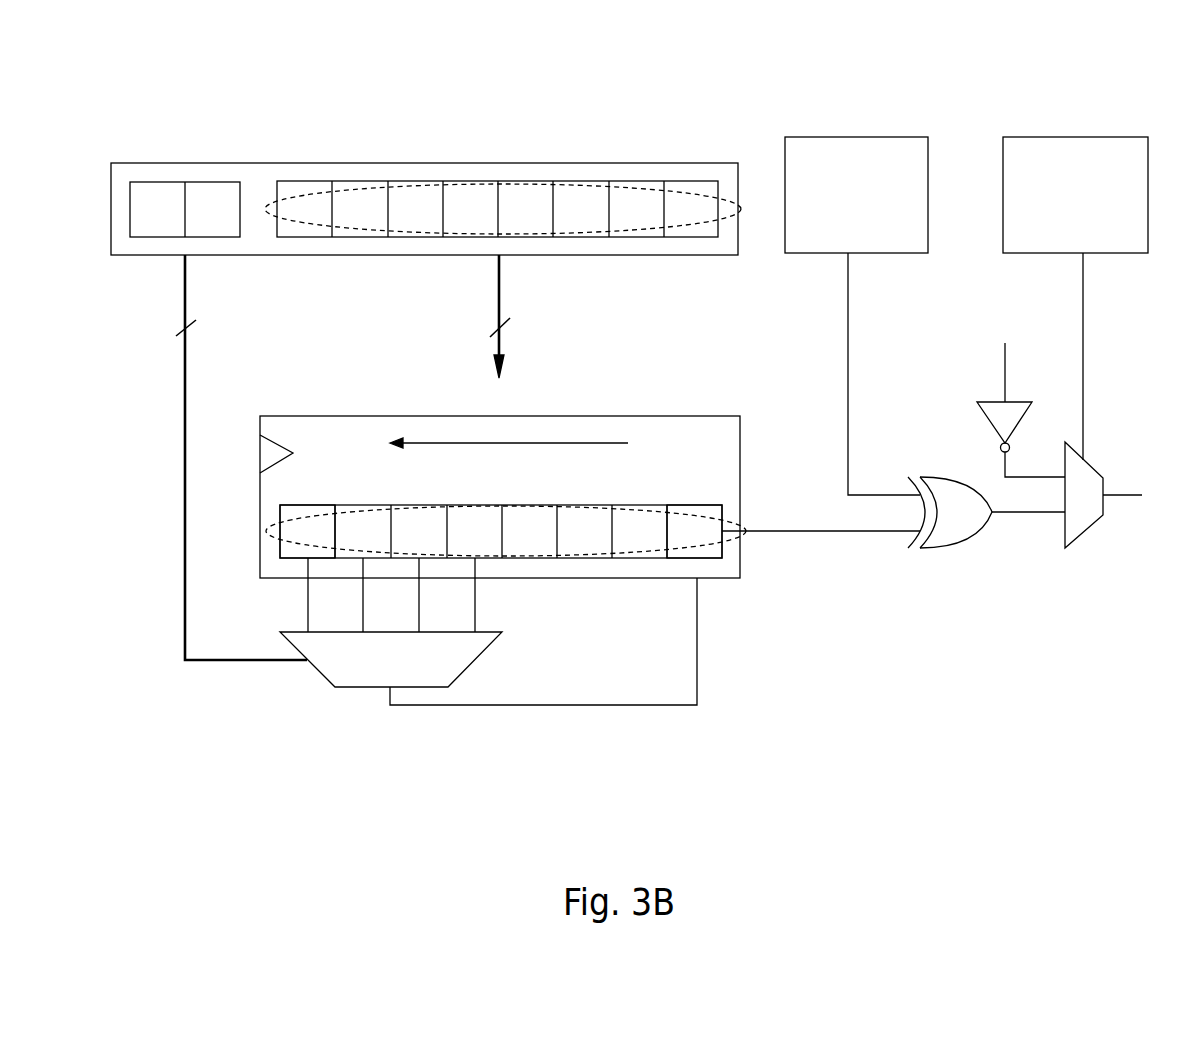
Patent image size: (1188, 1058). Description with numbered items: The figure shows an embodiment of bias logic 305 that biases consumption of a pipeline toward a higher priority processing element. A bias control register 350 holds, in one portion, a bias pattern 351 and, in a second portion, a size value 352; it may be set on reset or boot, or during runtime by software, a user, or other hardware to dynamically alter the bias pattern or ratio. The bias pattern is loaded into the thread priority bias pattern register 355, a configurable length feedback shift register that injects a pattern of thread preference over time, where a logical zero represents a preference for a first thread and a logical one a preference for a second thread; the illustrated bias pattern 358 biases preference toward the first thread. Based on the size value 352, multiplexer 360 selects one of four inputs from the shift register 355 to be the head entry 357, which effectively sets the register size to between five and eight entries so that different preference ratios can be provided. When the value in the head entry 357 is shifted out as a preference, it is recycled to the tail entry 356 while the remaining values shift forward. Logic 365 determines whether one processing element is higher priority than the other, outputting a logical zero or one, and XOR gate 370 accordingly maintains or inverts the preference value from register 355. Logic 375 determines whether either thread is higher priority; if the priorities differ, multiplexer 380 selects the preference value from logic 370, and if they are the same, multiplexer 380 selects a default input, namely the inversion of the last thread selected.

The bias logic 305 is at (265, 46).
The bias control register 350 is at (429, 186).
The bias pattern 351 is at (705, 185).
The size value 352 is at (130, 182).
The thread priority bias pattern register 355 is at (510, 506).
The tail entry 356 is at (700, 504).
The head entry 357 is at (305, 509).
The bias pattern 358 is at (728, 540).
The multiplexer 360 is at (391, 659).
The logic 365 is at (912, 137).
The XOR gate 370 is at (986, 512).
The logic 375 is at (1130, 137).
The multiplexer 380 is at (1103, 495).